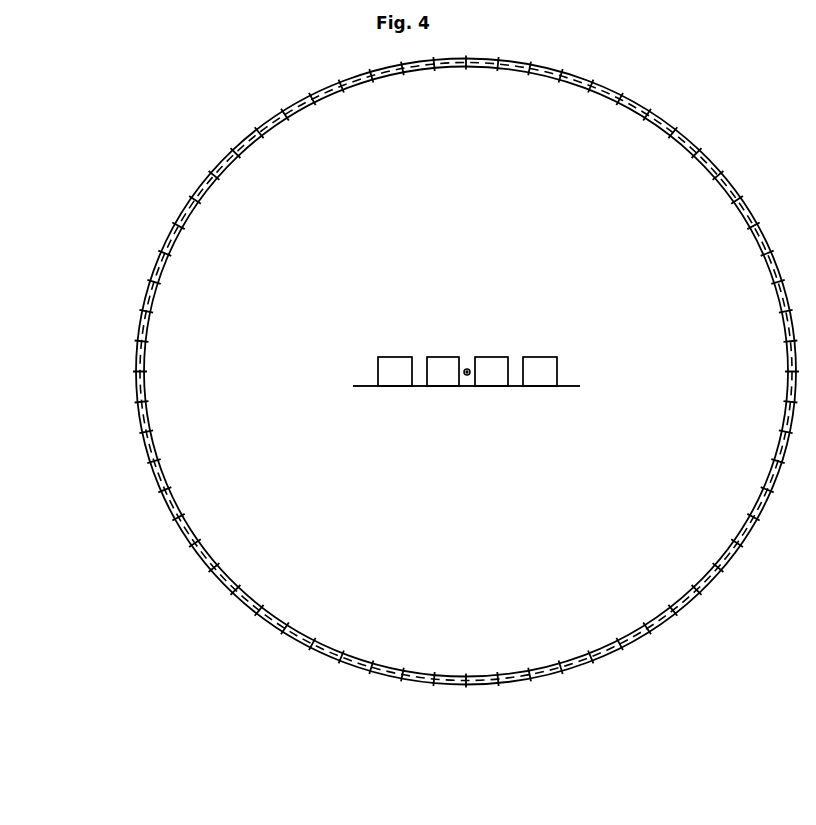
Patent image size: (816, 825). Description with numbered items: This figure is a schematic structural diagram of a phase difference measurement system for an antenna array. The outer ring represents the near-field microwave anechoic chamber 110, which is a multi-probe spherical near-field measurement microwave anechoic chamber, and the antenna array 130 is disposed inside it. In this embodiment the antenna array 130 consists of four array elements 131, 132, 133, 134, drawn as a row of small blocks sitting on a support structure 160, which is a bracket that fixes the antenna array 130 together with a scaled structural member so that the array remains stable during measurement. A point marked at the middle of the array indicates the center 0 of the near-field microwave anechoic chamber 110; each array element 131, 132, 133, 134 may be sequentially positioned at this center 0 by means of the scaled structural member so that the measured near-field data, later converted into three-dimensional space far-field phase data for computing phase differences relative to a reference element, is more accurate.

The near-field microwave anechoic chamber 110 is at (146, 434).
The antenna array 130 is at (542, 357).
The array element 131 is at (402, 387).
The array element 132 is at (438, 387).
The array element 133 is at (485, 387).
The array element 134 is at (533, 382).
The support structure 160 is at (578, 387).
The center of the near-field microwave anechoic chamber 0 is at (467, 375).